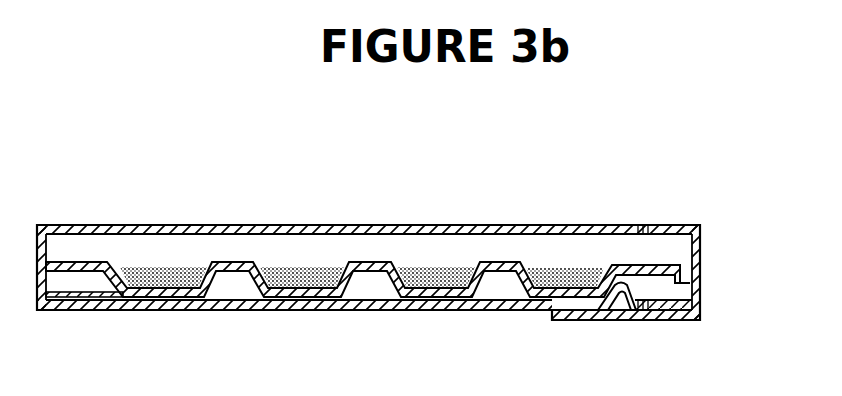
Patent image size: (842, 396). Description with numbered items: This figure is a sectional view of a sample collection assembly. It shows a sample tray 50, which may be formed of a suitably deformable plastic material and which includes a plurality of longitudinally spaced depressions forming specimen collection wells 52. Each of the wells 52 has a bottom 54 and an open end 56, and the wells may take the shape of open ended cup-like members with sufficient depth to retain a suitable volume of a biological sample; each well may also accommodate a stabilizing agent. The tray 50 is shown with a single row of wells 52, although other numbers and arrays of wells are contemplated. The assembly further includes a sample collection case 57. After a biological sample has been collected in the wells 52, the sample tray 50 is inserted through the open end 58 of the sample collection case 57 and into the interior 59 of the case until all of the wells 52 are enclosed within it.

The sample tray 50 is at (112, 298).
The specimen collection wells 52 is at (292, 290).
The bottom 54 is at (453, 293).
The open end 56 is at (543, 266).
The sample collection case 57 is at (110, 224).
The open end 58 is at (700, 307).
The interior 59 is at (462, 250).